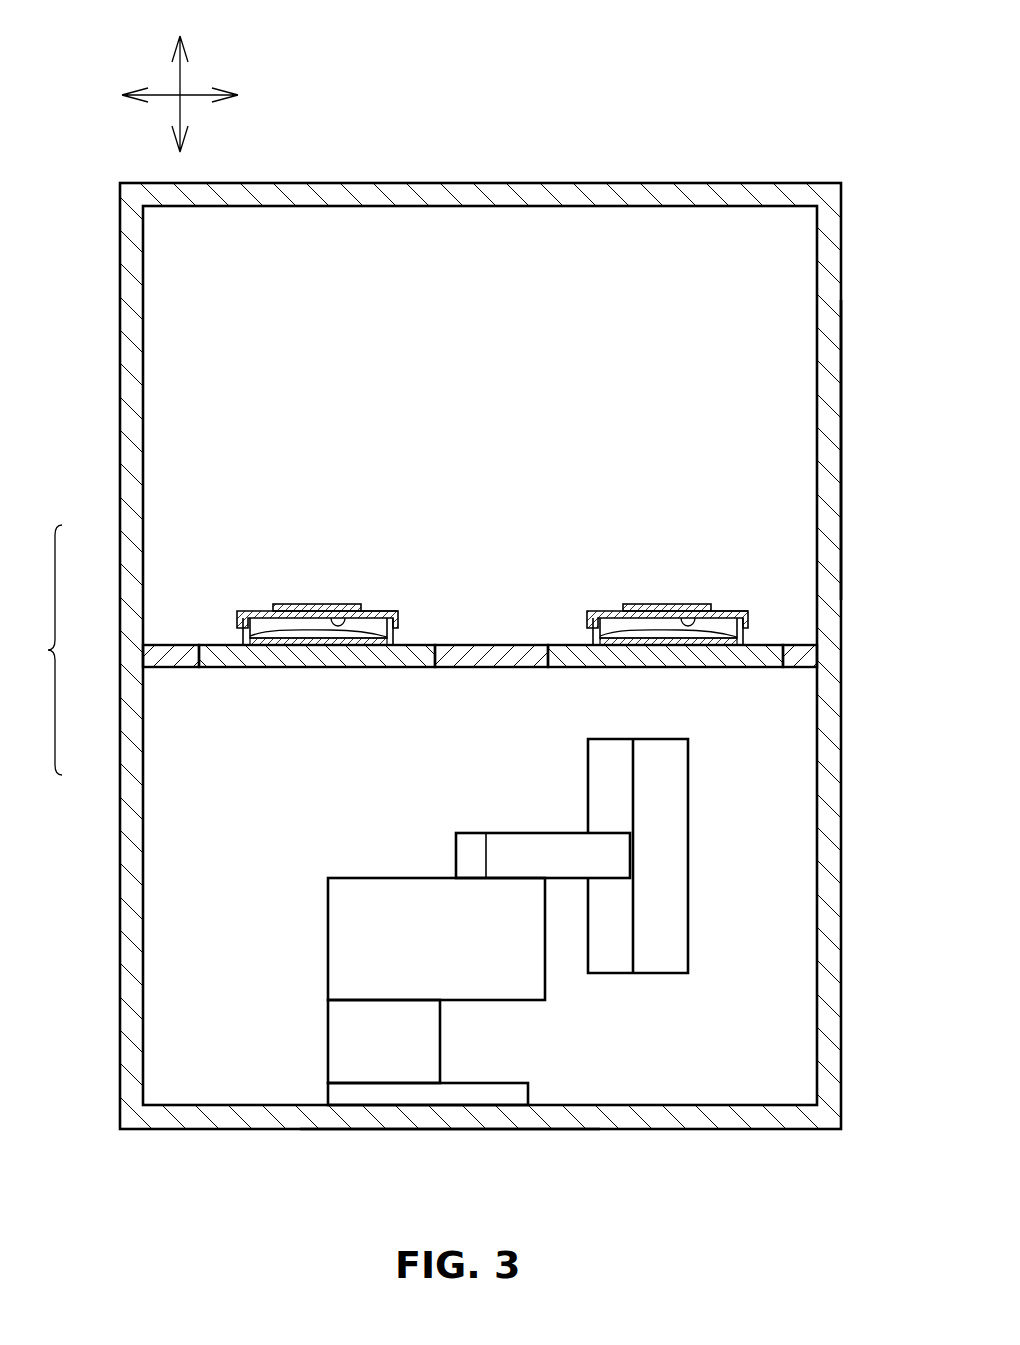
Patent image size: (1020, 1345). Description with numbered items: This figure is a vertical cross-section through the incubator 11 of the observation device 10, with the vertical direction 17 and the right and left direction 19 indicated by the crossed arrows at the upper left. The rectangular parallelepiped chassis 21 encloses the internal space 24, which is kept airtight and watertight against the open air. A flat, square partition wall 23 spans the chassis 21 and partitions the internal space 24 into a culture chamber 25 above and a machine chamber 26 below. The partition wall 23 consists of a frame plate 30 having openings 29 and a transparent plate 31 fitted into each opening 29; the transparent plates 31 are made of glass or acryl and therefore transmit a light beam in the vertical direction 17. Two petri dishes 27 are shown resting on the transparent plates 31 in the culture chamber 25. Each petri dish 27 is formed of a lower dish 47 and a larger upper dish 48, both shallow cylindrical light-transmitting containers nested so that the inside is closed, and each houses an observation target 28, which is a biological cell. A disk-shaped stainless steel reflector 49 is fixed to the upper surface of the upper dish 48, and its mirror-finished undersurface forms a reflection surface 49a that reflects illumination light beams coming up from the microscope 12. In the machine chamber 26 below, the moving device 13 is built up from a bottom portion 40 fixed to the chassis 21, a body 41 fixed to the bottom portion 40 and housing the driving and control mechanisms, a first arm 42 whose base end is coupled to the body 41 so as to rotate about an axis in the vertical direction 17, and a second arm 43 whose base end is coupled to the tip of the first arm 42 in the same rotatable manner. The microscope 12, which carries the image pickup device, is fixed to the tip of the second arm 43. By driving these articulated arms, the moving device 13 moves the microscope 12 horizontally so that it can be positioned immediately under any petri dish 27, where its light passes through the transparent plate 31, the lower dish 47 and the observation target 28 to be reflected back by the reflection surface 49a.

The observation device 10 is at (497, 70).
The incubator 11 is at (856, 166).
The microscope 12 is at (718, 944).
The moving device 13 is at (476, 1150).
The vertical direction 17 is at (182, 82).
The right and left direction 19 is at (158, 93).
The chassis 21 is at (830, 460).
The partition wall 23 is at (456, 622).
The internal space 24 is at (39, 650).
The culture chamber 25 is at (155, 542).
The machine chamber 26 is at (155, 765).
The petri dish 27 is at (268, 588).
The observation target 28 is at (372, 611).
The opening 29 is at (203, 668).
The frame plate 30 is at (490, 643).
The transparent plate 31 is at (312, 668).
The bottom portion 40 is at (493, 1083).
The body 41 is at (328, 1045).
The first arm 42 is at (328, 943).
The second arm 43 is at (526, 833).
The lower dish 47 is at (243, 637).
The upper dish 48 is at (248, 612).
The reflector 49 is at (315, 603).
The reflection surface 49a is at (349, 603).